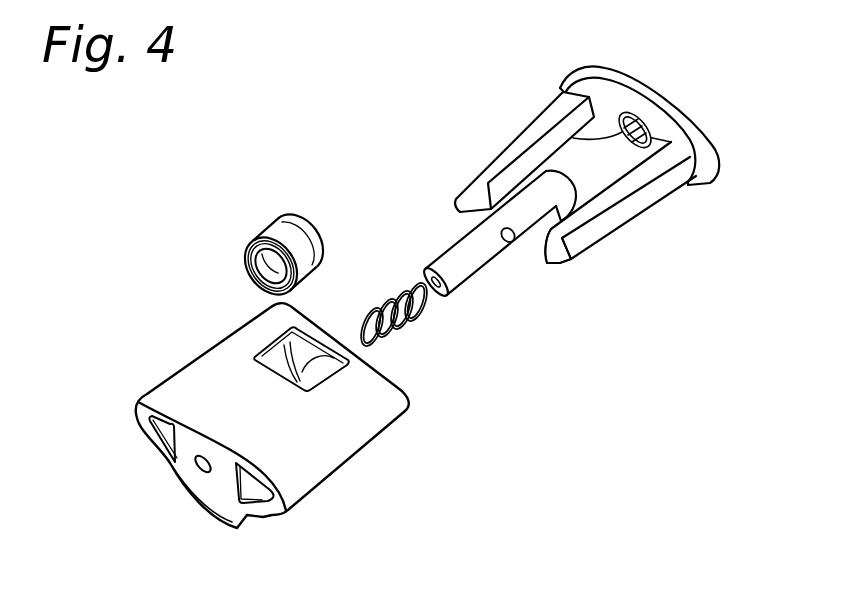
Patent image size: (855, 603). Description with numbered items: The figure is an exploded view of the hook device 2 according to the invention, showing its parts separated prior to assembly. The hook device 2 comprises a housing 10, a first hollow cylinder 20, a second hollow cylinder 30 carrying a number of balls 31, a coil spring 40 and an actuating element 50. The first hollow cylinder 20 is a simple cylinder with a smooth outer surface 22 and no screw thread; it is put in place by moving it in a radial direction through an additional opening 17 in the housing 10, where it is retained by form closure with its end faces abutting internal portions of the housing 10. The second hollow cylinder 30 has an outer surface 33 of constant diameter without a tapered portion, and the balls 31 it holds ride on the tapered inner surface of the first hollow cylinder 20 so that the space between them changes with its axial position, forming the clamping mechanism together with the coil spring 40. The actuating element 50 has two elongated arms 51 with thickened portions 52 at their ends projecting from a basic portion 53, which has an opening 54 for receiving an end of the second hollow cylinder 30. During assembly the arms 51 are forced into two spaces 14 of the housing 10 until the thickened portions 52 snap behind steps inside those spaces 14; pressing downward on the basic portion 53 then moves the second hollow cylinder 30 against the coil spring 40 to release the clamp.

The hook device 2 is at (570, 345).
The housing 10 is at (333, 427).
The spaces 14 is at (168, 443).
The additional opening 17 is at (271, 352).
The first hollow cylinder 20 is at (259, 232).
The smooth outer surface 22 is at (262, 236).
The second hollow cylinder 30 is at (482, 250).
The balls 31 is at (507, 243).
The outer surface 33 is at (432, 261).
The coil spring 40 is at (410, 326).
The actuating element 50 is at (587, 160).
The elongated arms 51 is at (627, 214).
The thickened portions 52 is at (558, 248).
The basic portion 53 is at (639, 92).
The opening 54 is at (647, 162).